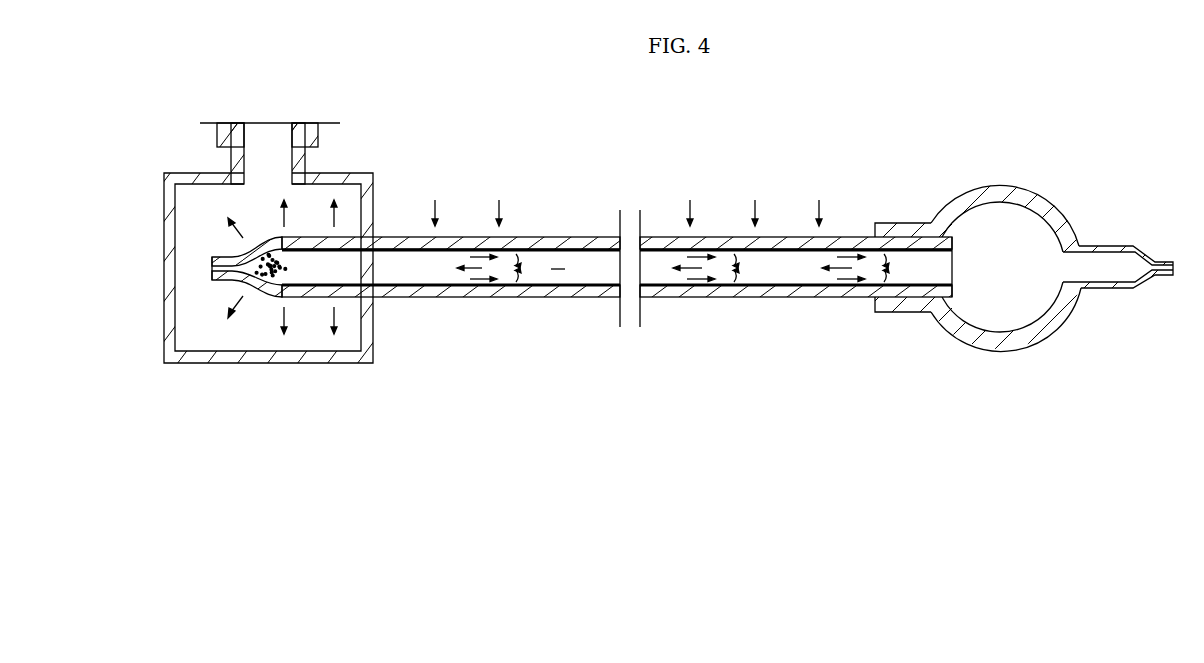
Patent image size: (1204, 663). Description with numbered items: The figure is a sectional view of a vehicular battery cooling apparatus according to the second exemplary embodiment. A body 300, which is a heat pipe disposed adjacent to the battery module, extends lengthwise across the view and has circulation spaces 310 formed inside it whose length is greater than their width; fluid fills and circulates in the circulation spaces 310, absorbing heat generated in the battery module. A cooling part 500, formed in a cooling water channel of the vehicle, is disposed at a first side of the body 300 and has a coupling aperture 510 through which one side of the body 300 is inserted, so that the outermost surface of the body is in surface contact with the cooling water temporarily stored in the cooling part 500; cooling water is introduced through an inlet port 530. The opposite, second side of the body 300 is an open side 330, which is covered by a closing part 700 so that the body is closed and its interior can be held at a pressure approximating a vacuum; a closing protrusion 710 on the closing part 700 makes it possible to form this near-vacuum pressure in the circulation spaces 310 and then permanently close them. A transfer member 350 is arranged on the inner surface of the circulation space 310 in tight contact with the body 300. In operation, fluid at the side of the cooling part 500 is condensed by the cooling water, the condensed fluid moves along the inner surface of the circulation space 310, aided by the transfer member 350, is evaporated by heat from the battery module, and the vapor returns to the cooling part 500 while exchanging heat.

The body 300 is at (550, 220).
The circulation space 310 is at (557, 269).
The open side 330 is at (950, 268).
The transfer member 350 is at (763, 285).
The cooling part 500 is at (272, 352).
The coupling aperture 510 is at (367, 283).
The inlet port 530 is at (300, 138).
The closing part 700 is at (1073, 201).
The closing protrusion 710 is at (1107, 288).